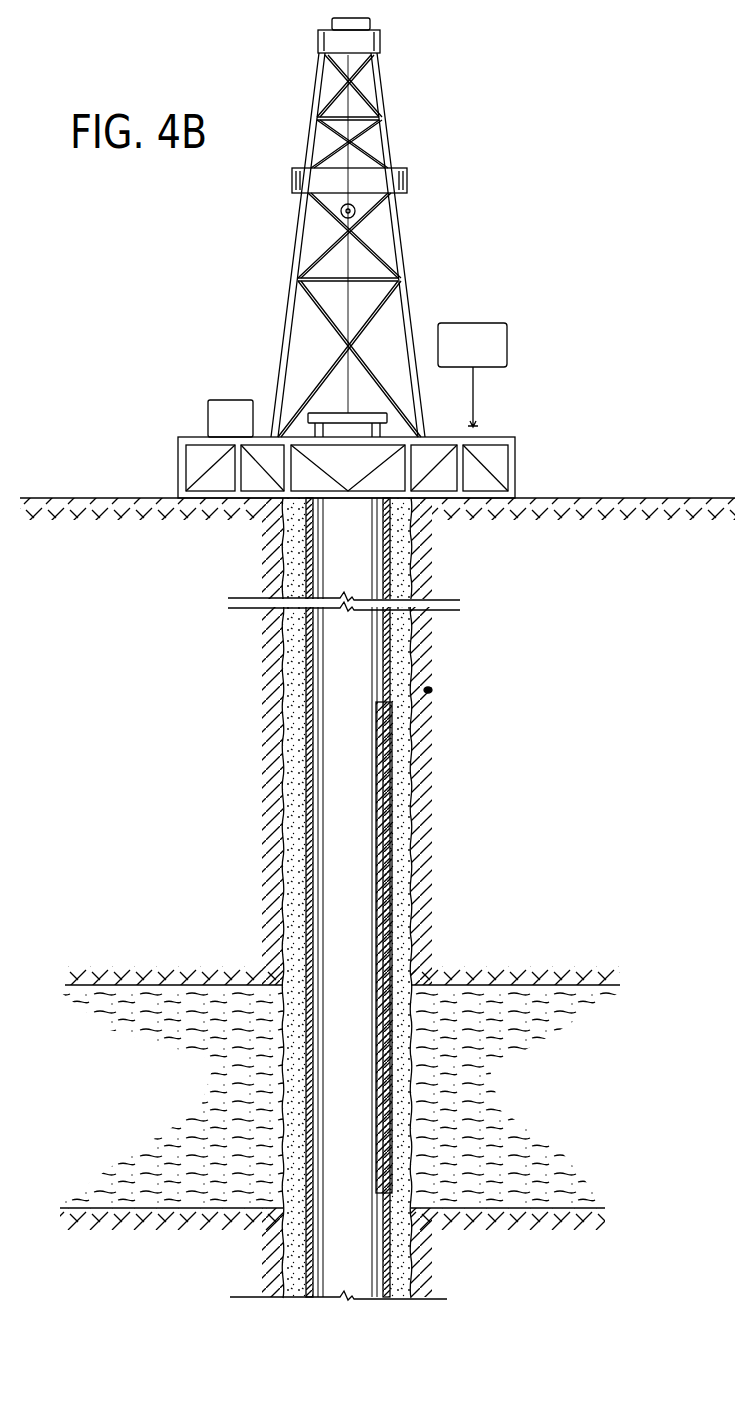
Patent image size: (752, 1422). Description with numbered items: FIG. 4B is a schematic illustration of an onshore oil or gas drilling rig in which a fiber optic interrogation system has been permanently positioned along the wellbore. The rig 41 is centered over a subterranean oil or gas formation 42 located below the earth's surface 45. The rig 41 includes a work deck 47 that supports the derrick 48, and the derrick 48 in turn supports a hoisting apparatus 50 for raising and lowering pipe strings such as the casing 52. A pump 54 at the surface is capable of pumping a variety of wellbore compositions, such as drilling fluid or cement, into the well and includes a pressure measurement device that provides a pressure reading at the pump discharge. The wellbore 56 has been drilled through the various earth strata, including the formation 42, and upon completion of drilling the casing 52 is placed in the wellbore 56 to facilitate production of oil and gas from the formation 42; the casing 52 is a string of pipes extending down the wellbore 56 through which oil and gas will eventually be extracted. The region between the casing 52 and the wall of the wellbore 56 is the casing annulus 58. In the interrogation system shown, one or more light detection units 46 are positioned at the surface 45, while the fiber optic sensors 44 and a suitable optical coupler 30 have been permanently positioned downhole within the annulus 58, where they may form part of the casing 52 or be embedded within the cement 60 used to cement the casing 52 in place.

The optical coupler 30 is at (385, 640).
The rig 41 is at (341, 441).
The subterranean oil or gas formation 42 is at (528, 1100).
The fiber optic sensors 44 is at (410, 800).
The earth's surface 45 is at (593, 498).
The light detection unit 46 is at (507, 343).
The work deck 47 is at (178, 460).
The derrick 48 is at (387, 108).
The hoisting apparatus 50 is at (386, 196).
The casing 52 is at (283, 688).
The pump 54 is at (208, 413).
The wellbore 56 is at (412, 682).
The casing annulus 58 is at (283, 636).
The cement 60 is at (283, 868).